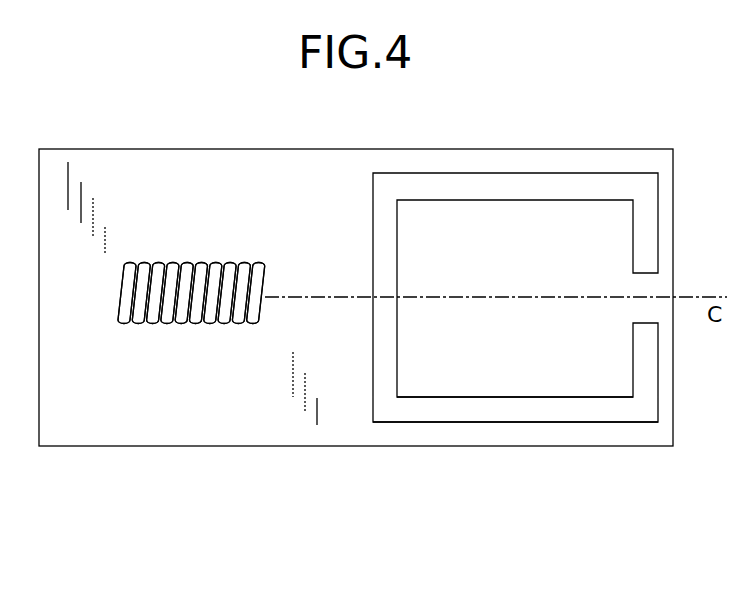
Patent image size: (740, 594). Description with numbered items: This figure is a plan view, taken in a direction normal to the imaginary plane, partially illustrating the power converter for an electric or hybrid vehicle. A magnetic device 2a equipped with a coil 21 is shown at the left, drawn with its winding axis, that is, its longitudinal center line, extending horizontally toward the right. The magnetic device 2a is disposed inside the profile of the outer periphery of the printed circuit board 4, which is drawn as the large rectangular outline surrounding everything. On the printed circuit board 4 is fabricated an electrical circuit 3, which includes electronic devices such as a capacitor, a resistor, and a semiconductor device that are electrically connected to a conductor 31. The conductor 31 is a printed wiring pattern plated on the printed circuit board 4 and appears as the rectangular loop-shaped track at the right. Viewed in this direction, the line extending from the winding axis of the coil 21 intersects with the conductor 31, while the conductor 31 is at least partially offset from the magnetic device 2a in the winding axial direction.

The magnetic device 2a is at (178, 273).
The coil 21 is at (148, 313).
The printed circuit board 4 is at (238, 407).
The electrical circuit 3 is at (539, 431).
The conductor 31 is at (457, 410).